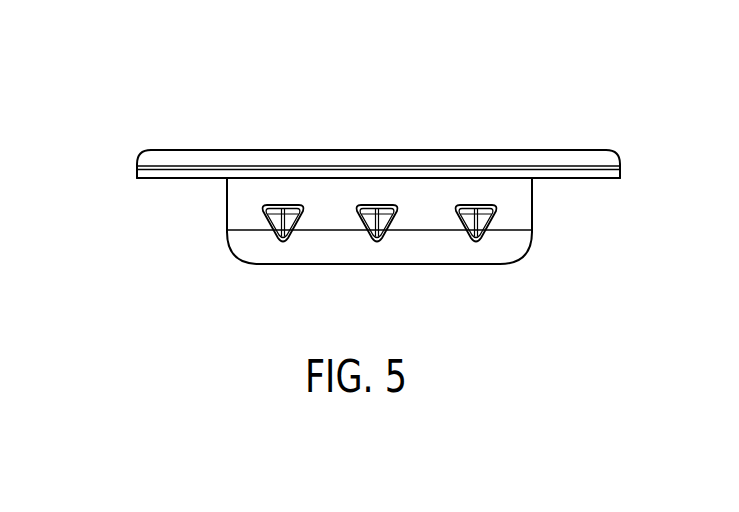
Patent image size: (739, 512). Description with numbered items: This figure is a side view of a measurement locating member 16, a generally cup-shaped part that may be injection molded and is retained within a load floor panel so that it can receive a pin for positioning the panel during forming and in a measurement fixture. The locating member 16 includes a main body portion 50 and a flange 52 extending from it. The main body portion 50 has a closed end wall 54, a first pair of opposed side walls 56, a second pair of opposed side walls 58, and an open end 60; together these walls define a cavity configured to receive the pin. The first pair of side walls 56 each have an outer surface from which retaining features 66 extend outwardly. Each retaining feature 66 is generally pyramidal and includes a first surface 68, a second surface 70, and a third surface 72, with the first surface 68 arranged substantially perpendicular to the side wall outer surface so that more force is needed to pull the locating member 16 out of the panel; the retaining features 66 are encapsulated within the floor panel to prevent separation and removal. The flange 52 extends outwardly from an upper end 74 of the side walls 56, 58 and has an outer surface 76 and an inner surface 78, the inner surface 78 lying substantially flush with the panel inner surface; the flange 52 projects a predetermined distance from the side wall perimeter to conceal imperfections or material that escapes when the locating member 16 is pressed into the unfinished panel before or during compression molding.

The measurement locating member 16 is at (119, 118).
The flange 52 is at (121, 168).
The open end 60 is at (382, 139).
The outer surface 76 is at (596, 149).
The inner surface 78 is at (608, 178).
The main body portion 50 is at (191, 218).
The second pair of opposed side walls 58 is at (227, 230).
The closed end wall 54 is at (386, 264).
The first pair of opposed side walls 56 is at (423, 215).
The upper end 74 is at (542, 190).
The retaining feature 66 is at (476, 194).
The first surface 68 is at (284, 207).
The second surface 70 is at (277, 239).
The third surface 72 is at (293, 241).